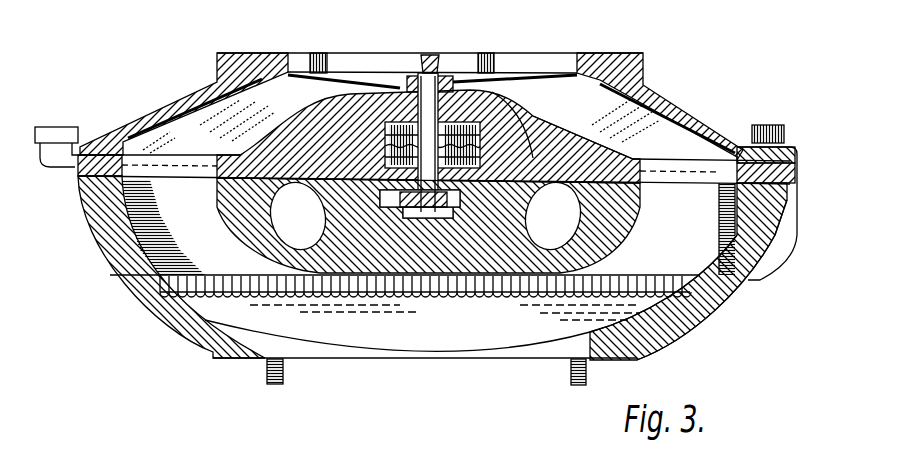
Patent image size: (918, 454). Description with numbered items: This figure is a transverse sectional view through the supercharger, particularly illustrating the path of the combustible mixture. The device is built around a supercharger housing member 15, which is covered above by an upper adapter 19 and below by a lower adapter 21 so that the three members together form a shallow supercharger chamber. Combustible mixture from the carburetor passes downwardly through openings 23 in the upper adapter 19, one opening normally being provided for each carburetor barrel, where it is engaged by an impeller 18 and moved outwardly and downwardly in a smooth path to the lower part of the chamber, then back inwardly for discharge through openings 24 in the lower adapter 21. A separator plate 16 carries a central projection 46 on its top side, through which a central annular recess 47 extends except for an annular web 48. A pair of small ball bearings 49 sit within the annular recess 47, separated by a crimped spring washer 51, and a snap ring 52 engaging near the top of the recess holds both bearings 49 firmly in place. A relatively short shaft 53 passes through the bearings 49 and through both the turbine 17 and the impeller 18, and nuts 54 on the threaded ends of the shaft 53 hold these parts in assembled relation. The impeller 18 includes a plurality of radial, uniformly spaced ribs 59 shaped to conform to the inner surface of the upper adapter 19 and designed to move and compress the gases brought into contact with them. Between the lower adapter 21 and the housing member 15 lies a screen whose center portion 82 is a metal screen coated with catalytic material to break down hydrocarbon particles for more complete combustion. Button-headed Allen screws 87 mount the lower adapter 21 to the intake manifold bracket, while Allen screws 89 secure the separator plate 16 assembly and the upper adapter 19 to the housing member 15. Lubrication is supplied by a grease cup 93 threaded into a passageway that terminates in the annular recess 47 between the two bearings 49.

The supercharger housing member 15 is at (768, 246).
The separator plate 16 is at (795, 177).
The turbine 17 is at (510, 213).
The impeller 18 is at (476, 87).
The upper adapter 19 is at (692, 112).
The lower adapter 21 is at (658, 344).
The openings 23 is at (534, 60).
The openings 24 is at (498, 356).
The central projection 46 is at (508, 97).
The central annular recess 47 is at (503, 137).
The annular web 48 is at (481, 158).
The ball bearings 49 is at (386, 157).
The crimped spring washer 51 is at (493, 140).
The snap ring 52 is at (406, 118).
The shaft 53 is at (429, 76).
The nuts 54 is at (448, 77).
The radial ribs 59 is at (645, 117).
The screen center portion 82 is at (684, 320).
The button-headed Allen screws 87 is at (569, 376).
The Allen screws 89 is at (782, 123).
The grease cup 93 is at (58, 128).